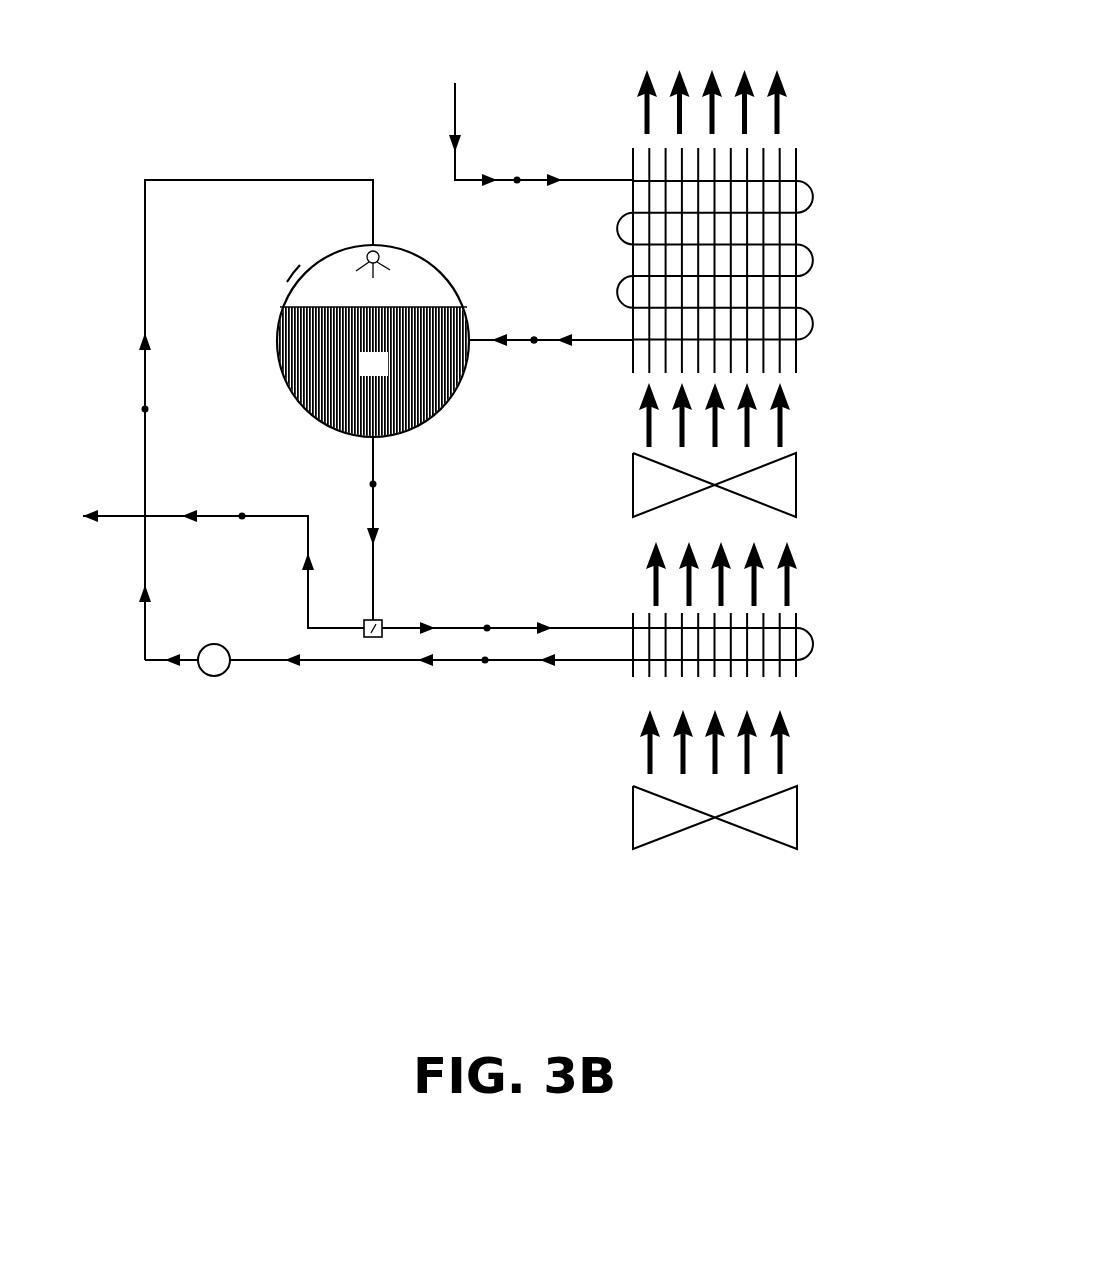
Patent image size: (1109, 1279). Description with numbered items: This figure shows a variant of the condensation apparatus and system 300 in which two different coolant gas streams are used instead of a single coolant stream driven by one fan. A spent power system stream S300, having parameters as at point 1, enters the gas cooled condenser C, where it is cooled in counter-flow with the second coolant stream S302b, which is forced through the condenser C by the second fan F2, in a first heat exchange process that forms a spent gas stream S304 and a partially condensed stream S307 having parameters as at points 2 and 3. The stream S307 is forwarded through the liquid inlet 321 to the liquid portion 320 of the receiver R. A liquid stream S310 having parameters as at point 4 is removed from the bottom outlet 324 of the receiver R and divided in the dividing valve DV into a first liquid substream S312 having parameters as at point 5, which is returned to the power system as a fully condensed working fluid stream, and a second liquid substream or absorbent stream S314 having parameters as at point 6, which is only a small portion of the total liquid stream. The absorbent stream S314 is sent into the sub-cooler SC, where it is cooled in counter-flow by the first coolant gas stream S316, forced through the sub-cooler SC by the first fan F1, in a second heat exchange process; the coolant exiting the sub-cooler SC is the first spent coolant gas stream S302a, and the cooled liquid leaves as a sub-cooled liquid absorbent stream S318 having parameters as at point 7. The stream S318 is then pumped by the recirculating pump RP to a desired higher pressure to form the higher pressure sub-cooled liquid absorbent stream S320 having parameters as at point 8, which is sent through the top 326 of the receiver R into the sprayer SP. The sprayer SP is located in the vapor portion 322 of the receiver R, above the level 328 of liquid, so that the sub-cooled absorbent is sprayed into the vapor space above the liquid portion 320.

The condensation apparatus and system 300 is at (898, 402).
The liquid portion 320 is at (291, 405).
The liquid inlet 321 is at (472, 340).
The vapor portion 322 is at (291, 277).
The bottom outlet 324 is at (377, 438).
The top 326 is at (373, 245).
The level of liquid 328 is at (303, 307).
The spent power system stream S300 is at (578, 178).
The spent gas stream S304 is at (792, 113).
The partially condensed stream S307 is at (518, 343).
The liquid stream S310 is at (367, 518).
The first liquid substream S312 is at (160, 517).
The second liquid substream or absorbent stream S314 is at (522, 625).
The initial gas coolant stream S316 is at (638, 762).
The sub-cooled liquid absorbent stream S318 is at (328, 662).
The higher pressure sub-cooled liquid absorbent stream S320 is at (177, 178).
The first spent coolant gas stream S302a is at (798, 588).
The second coolant stream S302b is at (790, 418).
The point 1 is at (519, 164).
The point 2 is at (537, 355).
The point 3 is at (537, 325).
The point 4 is at (383, 486).
The point 5 is at (244, 499).
The point 6 is at (489, 614).
The point 7 is at (489, 675).
The point 8 is at (155, 411).
The gas cooled condenser C is at (729, 260).
The sub-cooler SC is at (743, 645).
The first fan F1 is at (739, 817).
The second fan F2 is at (696, 485).
The sprayer SP is at (362, 260).
The dividing valve DV is at (378, 620).
The recirculating pump RP is at (216, 646).
The receiver R is at (374, 364).